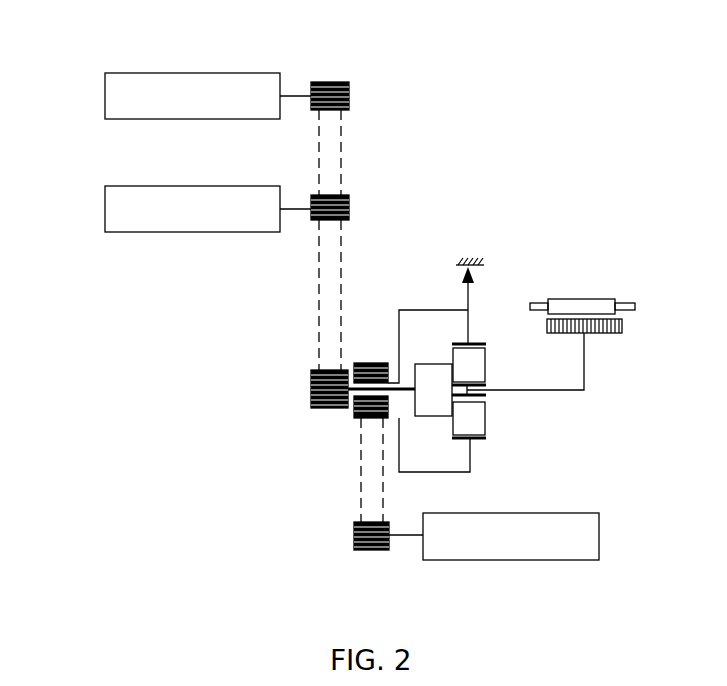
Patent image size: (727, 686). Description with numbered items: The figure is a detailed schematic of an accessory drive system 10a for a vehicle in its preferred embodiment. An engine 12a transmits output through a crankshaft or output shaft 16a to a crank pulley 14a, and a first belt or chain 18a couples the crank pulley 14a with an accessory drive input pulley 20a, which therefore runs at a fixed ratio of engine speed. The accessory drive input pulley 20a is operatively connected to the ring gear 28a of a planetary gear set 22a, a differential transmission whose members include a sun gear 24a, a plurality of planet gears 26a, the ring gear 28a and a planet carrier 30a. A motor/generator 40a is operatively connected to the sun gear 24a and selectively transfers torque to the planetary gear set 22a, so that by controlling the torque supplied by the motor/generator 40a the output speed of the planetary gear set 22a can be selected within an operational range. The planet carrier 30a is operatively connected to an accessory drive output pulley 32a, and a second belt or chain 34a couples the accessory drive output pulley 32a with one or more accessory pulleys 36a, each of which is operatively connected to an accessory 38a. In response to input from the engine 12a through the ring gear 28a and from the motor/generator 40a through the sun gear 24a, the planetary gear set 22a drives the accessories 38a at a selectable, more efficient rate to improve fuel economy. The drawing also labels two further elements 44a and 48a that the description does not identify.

The accessory drive system 10a is at (614, 100).
The engine 12a is at (565, 560).
The crank pulley 14a is at (365, 550).
The output shaft 16a is at (405, 538).
The first belt or chain 18a is at (360, 492).
The accessory drive input pulley 20a is at (372, 363).
The planetary gear set 22a is at (525, 432).
The sun gear 24a is at (488, 388).
The planet gears 26a is at (478, 361).
The ring gear 28a is at (478, 343).
The planet carrier 30a is at (434, 417).
The accessory drive output pulley 32a is at (311, 386).
The second belt or chain 34a is at (342, 291).
The accessory pulleys 36a is at (338, 82).
The accessories 38a is at (113, 73).
The motor/generator 40a is at (608, 300).
The one-way clutch 44a is at (476, 270).
The fixed structure 48a is at (474, 258).